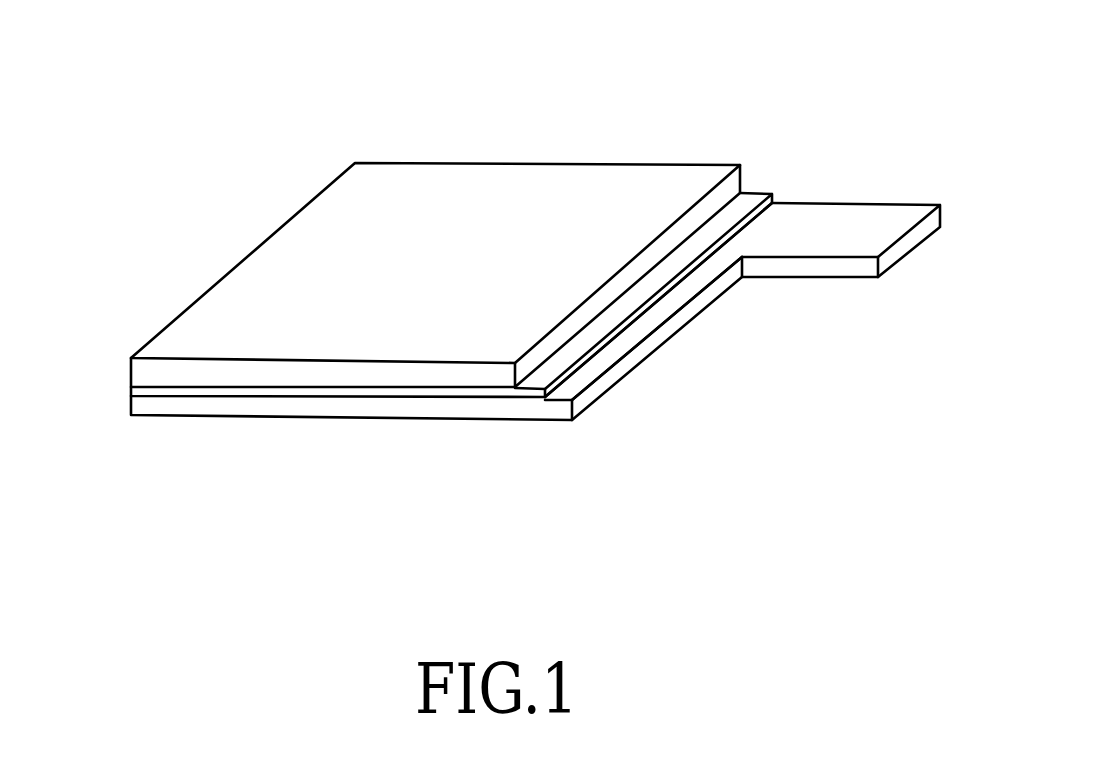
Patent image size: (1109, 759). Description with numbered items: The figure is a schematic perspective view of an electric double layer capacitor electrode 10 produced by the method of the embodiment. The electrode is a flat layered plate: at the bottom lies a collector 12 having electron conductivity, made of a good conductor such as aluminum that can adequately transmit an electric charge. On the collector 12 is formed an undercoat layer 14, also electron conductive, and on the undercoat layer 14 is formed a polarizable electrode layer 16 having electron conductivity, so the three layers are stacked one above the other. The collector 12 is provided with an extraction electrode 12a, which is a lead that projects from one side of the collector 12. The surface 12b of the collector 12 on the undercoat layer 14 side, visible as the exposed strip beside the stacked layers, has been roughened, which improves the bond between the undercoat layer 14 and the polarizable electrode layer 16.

The electric double layer capacitor electrode 10 is at (808, 48).
The collector 12 is at (183, 405).
The extraction electrode 12a is at (845, 218).
The surface 12b is at (600, 365).
The undercoat layer 14 is at (140, 392).
The polarizable electrode layer 16 is at (220, 317).